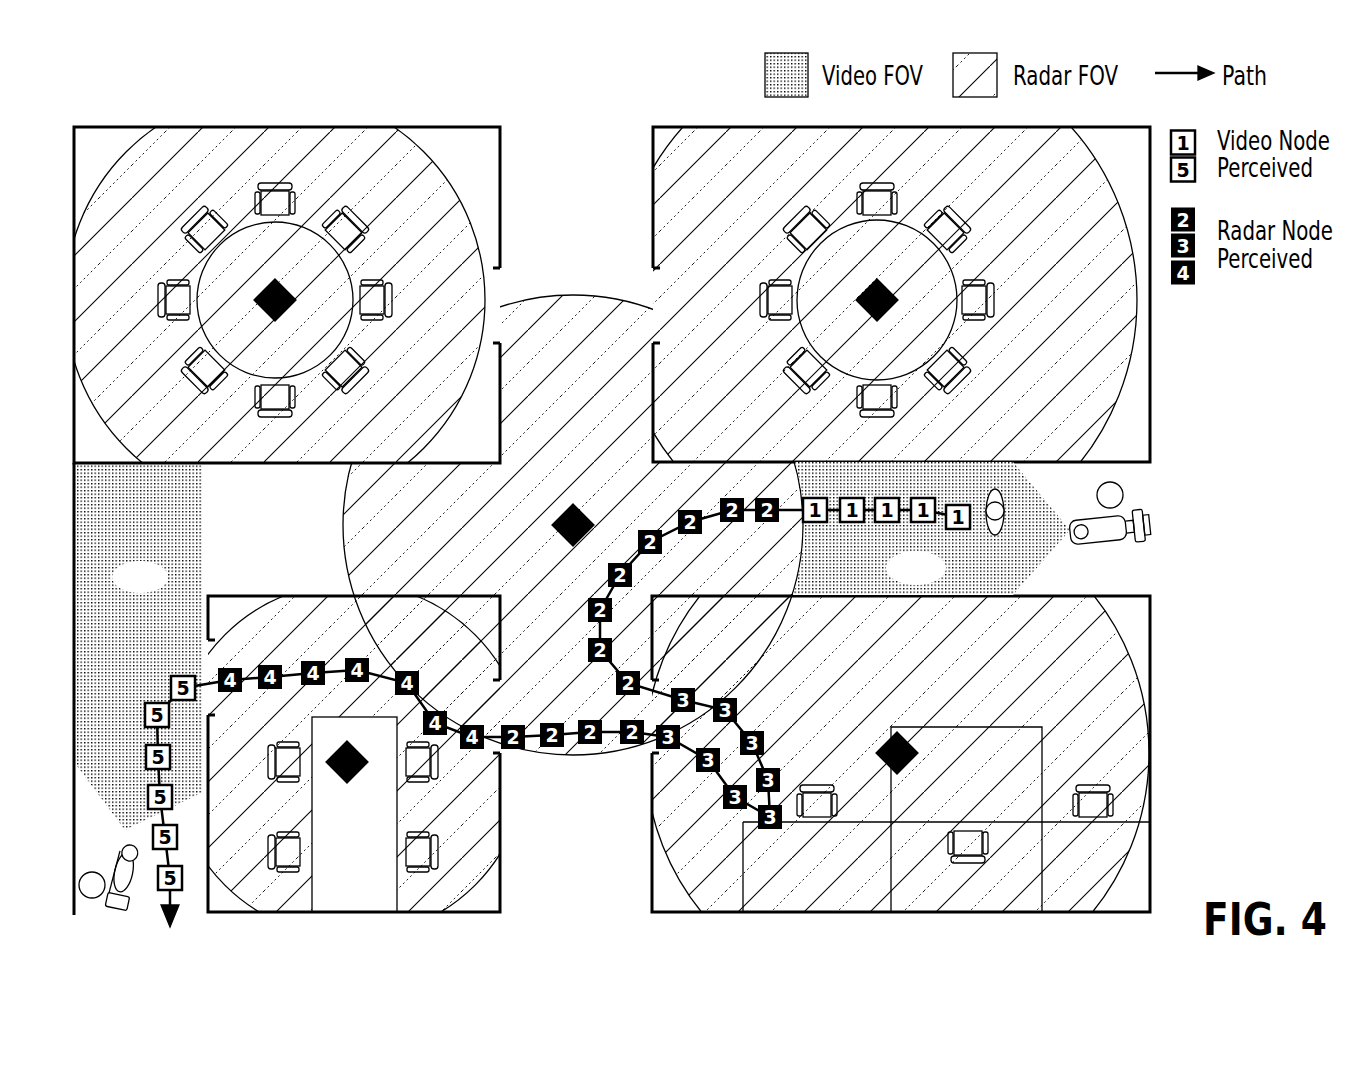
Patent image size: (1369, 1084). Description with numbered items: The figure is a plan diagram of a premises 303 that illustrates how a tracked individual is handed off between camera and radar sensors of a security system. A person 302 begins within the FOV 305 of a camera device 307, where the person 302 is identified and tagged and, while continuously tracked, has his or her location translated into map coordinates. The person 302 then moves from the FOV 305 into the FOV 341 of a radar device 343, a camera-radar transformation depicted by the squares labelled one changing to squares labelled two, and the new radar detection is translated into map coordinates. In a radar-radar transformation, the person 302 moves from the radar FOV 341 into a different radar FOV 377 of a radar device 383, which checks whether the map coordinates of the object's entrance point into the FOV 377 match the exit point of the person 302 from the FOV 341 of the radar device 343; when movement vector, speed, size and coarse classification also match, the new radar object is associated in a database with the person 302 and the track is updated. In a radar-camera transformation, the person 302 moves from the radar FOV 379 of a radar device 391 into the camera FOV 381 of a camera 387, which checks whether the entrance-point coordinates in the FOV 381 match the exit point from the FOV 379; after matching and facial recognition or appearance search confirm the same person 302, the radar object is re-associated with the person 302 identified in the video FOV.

The premises 303 is at (146, 98).
The radar FOV 341 is at (503, 539).
The radar device 343 is at (572, 503).
The FOV of camera device 305 is at (937, 579).
The person 302 is at (1003, 520).
The camera device 307 is at (1150, 530).
The radar FOV 377 is at (932, 674).
The radar FOV 379 is at (372, 644).
The camera FOV 381 is at (160, 591).
The radar device 383 is at (905, 766).
The camera 387 is at (122, 918).
The radar device 391 is at (348, 783).